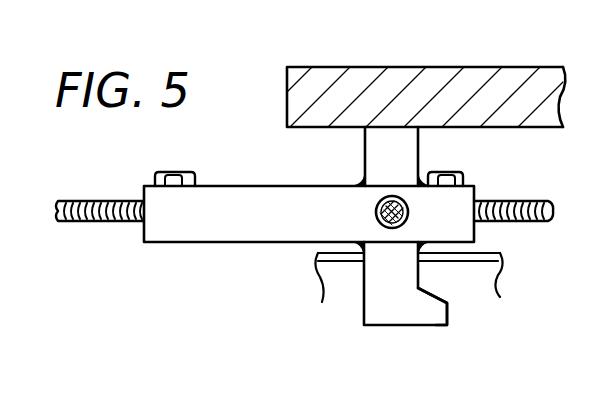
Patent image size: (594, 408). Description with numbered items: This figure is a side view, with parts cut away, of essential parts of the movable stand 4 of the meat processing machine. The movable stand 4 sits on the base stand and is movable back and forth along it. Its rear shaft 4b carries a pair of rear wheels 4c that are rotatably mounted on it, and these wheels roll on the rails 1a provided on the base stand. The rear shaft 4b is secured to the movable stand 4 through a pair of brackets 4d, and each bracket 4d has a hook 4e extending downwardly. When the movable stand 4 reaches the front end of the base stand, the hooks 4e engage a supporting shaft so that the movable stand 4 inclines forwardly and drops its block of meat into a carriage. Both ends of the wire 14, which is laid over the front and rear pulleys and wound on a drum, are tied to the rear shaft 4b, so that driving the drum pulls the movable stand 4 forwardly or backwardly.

The movable stand 4 is at (505, 121).
The rear shaft 4b is at (376, 210).
The rear wheels 4c is at (357, 183).
The brackets 4d is at (370, 287).
The hooks 4e is at (437, 313).
The rails 1a is at (503, 257).
The wire 14 is at (100, 221).